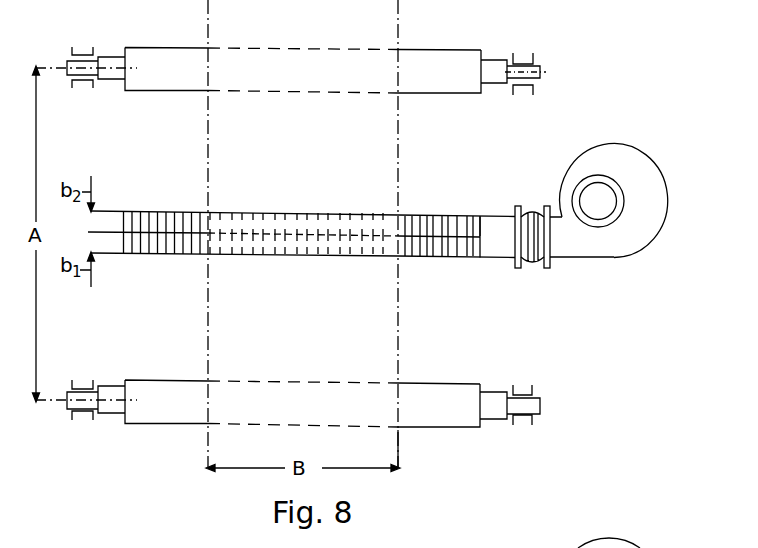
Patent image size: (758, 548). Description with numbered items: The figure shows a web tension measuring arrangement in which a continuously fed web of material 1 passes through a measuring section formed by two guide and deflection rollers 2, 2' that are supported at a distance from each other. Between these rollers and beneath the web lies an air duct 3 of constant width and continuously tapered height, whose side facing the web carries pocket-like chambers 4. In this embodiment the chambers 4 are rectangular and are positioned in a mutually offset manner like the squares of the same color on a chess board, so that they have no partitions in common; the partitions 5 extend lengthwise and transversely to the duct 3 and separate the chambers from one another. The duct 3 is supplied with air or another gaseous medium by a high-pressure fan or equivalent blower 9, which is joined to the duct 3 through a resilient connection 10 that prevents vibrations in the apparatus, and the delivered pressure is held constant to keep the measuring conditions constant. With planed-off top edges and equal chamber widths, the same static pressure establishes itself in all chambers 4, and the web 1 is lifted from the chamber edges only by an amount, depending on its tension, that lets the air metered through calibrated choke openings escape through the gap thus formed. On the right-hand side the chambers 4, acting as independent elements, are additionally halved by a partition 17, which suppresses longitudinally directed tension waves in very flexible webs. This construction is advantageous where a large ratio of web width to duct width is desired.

The web of material 1 is at (382, 446).
The guide and deflection roller 2 is at (303, 421).
The guide and deflection roller 2' is at (306, 56).
The air duct 3 is at (488, 250).
The pocket-like chambers 4 is at (290, 254).
The partitions 5 is at (455, 215).
The blower 9 is at (611, 249).
The resilient connection 10 is at (535, 263).
The partition 17 is at (456, 238).